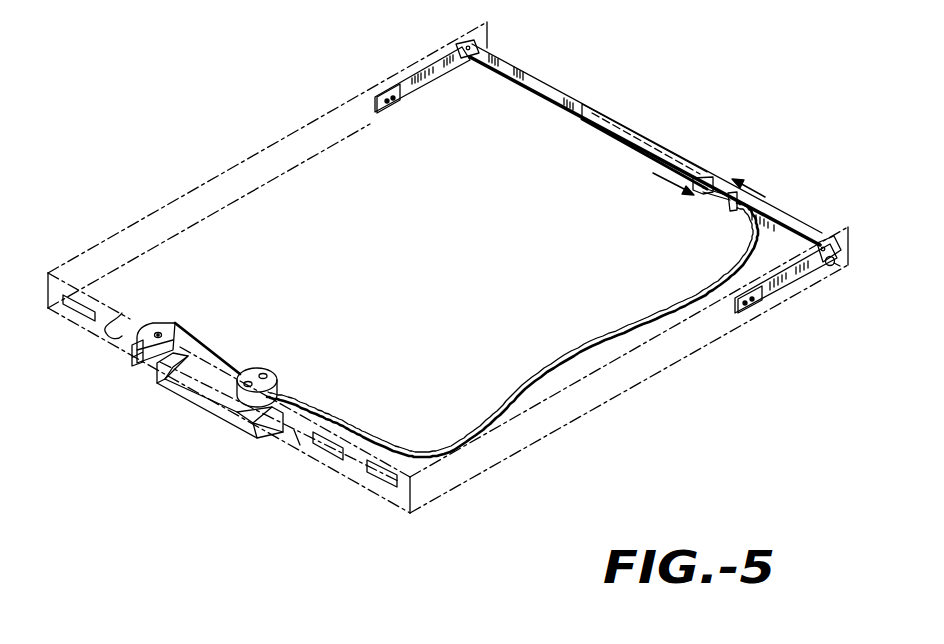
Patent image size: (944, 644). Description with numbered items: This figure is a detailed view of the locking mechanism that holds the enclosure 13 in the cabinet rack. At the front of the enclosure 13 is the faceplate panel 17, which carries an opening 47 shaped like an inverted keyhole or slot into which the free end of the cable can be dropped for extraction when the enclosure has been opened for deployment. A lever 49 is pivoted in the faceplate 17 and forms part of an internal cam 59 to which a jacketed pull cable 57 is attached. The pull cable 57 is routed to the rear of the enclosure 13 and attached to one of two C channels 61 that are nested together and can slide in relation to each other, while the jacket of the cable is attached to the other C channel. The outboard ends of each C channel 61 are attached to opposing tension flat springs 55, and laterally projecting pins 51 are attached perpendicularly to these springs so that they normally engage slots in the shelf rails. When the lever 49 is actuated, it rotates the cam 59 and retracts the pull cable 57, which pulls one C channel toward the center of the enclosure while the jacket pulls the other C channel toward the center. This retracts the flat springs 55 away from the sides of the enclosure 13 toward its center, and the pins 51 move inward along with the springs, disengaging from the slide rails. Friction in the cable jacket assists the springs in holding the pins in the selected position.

The enclosure 13 is at (153, 149).
The faceplate panel 17 is at (297, 437).
The opening 47 is at (112, 330).
The lever 49 is at (137, 363).
The laterally projecting pins 51 is at (837, 267).
The tension flat springs 55 is at (437, 70).
The jacketed pull cable 57 is at (533, 380).
The cam 59 is at (160, 322).
The C channels 61 is at (597, 130).